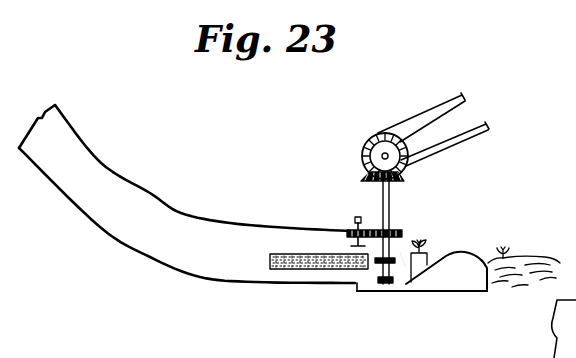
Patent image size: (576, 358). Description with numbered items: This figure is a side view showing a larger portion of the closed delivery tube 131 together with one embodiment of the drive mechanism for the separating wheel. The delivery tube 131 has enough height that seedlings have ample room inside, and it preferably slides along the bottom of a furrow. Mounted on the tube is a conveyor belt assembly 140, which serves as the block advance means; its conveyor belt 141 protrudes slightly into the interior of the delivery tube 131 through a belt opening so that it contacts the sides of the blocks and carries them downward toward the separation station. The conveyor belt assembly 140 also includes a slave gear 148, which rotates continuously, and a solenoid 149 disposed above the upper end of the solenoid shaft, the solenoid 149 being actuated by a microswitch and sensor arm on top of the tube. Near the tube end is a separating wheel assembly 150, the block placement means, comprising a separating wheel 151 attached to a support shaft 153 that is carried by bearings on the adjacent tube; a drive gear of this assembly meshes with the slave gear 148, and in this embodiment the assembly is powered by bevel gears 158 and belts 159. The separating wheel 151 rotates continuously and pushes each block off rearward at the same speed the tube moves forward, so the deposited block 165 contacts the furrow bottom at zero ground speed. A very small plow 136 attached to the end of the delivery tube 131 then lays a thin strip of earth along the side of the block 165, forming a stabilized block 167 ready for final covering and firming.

The closed delivery tube 131 is at (181, 213).
The plow 136 is at (471, 246).
The conveyor belt assembly 140 is at (342, 289).
The conveyor belt 141 is at (282, 264).
The slave gear 148 is at (349, 232).
The solenoid 149 is at (356, 217).
The separating wheel assembly 150 is at (403, 219).
The separating wheel 151 is at (403, 249).
The support shaft 153 is at (389, 190).
The bevel gears 158 is at (363, 171).
The belts 159 is at (450, 98).
The deposited block 165 is at (422, 266).
The stabilized block 167 is at (510, 257).